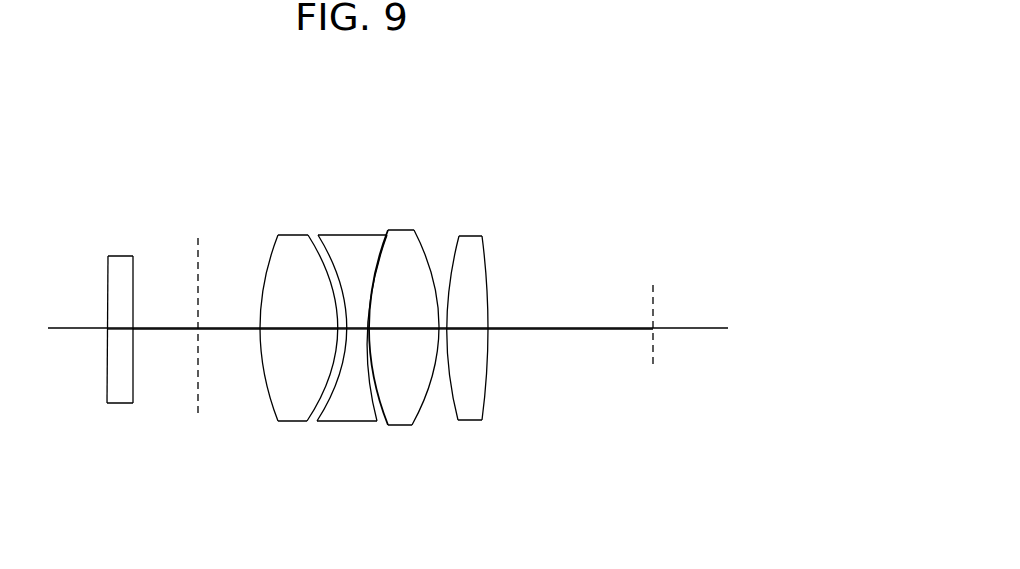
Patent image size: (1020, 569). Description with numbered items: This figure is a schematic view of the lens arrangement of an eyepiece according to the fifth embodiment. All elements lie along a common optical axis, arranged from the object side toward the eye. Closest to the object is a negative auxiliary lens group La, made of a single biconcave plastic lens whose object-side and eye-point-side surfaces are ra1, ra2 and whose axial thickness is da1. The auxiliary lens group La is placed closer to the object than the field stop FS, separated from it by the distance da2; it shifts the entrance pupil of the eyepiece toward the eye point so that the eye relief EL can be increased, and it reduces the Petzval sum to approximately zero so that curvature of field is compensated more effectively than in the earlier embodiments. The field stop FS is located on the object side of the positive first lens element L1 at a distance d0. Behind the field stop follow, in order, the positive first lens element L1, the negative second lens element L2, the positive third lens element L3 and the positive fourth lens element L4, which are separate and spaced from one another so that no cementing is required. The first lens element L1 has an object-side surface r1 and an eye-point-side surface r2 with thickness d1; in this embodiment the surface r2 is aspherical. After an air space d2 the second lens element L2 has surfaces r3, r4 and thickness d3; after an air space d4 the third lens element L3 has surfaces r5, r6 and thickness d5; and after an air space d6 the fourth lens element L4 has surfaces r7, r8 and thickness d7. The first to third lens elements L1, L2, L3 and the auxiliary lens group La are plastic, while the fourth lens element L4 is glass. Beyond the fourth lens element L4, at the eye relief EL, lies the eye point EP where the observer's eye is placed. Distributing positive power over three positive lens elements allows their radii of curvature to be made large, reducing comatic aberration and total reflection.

The negative auxiliary lens group La is at (167, 236).
The object-side surface of auxiliary lens group ra1 is at (108, 256).
The eye-point-side surface of auxiliary lens group ra2 is at (133, 267).
The field stop FS is at (197, 405).
The positive first lens element L1 is at (314, 244).
The negative second lens element L2 is at (375, 243).
The positive third lens element L3 is at (429, 245).
The positive fourth lens element L4 is at (527, 241).
The object-side surface of first lens element r1 is at (278, 235).
The eye-point-side surface of first lens element r2 is at (308, 236).
The object-side surface of second lens element r3 is at (358, 244).
The eye-point-side surface of second lens element r4 is at (403, 242).
The object-side surface of third lens element r5 is at (388, 231).
The eye-point-side surface of third lens element r6 is at (415, 230).
The object-side surface of fourth lens element r7 is at (460, 237).
The eye-point-side surface of fourth lens element r8 is at (482, 236).
The thickness of auxiliary lens group da1 is at (113, 330).
The distance from auxiliary lens group to field stop da2 is at (168, 330).
The distance between field stop and first lens element d0 is at (232, 330).
The thickness of first lens element d1 is at (290, 330).
The distance between first and second lens elements d2 is at (337, 330).
The thickness of second lens element d3 is at (360, 330).
The distance between second and third lens elements d4 is at (368, 330).
The thickness of third lens element d5 is at (403, 330).
The distance between third and fourth lens elements d6 is at (444, 330).
The thickness of fourth lens element d7 is at (467, 330).
The eye relief EL is at (584, 328).
The eye point EP is at (653, 355).